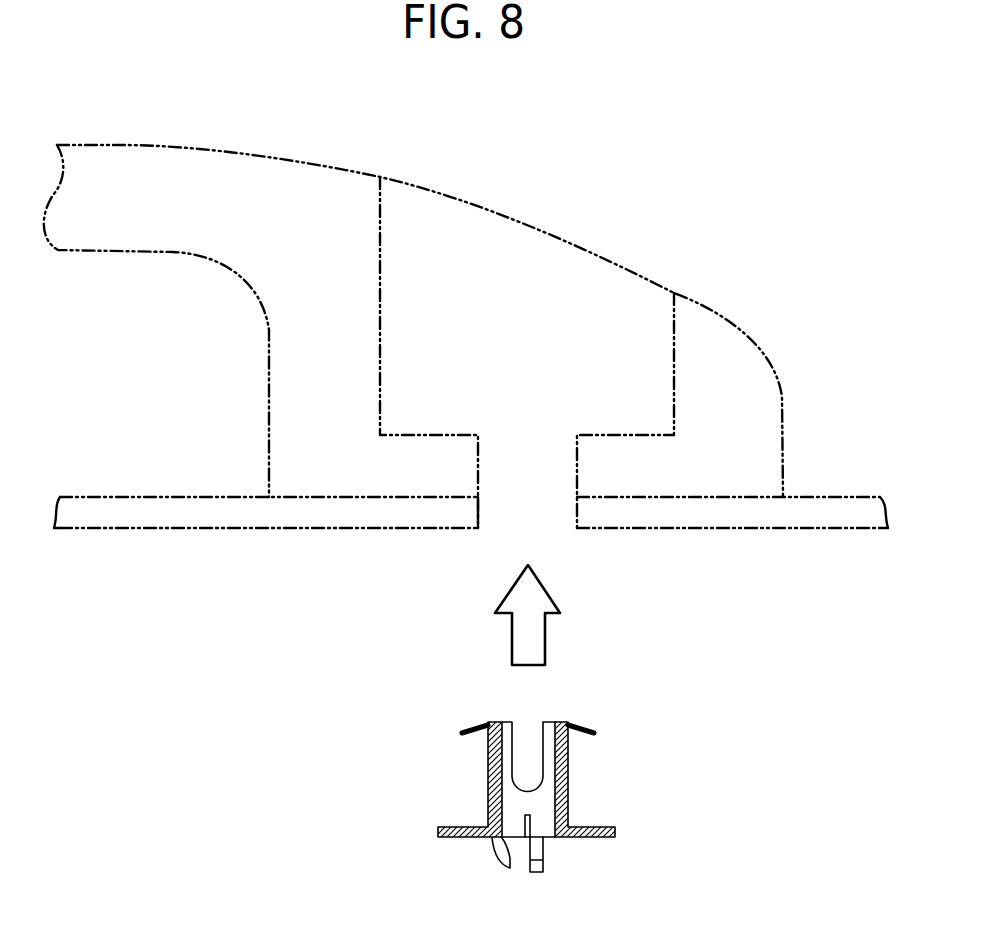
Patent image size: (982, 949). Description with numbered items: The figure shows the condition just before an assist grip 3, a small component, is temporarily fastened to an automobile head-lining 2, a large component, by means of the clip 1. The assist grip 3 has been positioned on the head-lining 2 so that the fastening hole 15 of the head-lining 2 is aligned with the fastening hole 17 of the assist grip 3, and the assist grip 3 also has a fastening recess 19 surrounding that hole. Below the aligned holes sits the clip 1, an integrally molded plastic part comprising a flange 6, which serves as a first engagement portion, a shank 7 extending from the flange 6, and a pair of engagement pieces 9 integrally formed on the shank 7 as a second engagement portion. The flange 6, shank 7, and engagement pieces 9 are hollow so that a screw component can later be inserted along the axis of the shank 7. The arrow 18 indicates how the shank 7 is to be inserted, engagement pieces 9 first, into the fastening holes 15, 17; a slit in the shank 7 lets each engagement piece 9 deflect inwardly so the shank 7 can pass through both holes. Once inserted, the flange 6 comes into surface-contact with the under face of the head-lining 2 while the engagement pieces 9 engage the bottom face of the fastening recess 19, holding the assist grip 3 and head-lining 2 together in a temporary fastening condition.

The clip 1 is at (545, 795).
The head-lining 2 is at (105, 514).
The assist grip 3 is at (128, 182).
The flange 6 is at (462, 838).
The shank 7 is at (492, 770).
The engagement piece 9 is at (472, 730).
The fastening hole of the head-lining 15 is at (480, 518).
The fastening hole of the assist grip 17 is at (482, 452).
The arrow 18 is at (528, 637).
The fastening recess 19 is at (672, 358).